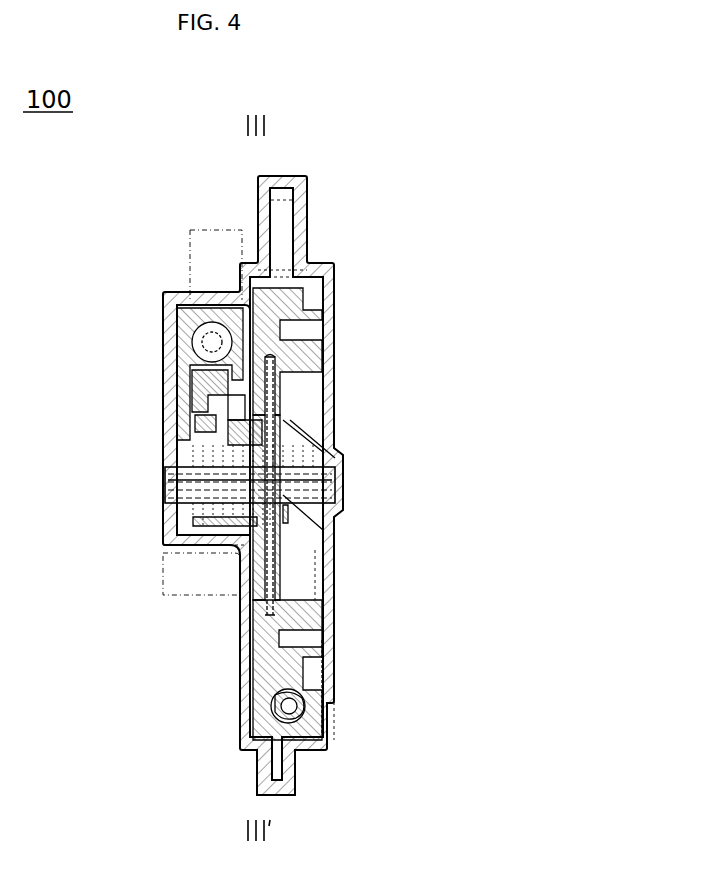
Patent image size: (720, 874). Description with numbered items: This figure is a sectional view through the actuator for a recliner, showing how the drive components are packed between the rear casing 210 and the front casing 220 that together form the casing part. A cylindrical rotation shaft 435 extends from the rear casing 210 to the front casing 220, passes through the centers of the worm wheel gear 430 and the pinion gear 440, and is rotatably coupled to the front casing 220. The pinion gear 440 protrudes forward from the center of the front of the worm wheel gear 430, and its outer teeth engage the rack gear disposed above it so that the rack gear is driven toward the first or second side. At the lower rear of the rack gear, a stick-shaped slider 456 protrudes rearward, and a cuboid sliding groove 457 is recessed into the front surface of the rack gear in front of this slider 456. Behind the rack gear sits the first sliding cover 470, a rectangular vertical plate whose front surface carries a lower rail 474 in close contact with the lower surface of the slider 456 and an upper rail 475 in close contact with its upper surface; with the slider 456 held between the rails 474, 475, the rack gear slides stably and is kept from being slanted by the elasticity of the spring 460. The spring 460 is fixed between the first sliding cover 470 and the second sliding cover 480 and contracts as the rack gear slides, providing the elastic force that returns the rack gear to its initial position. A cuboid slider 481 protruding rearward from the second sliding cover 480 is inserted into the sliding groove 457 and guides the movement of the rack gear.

The rear casing 210 is at (327, 290).
The front casing 220 is at (176, 350).
The worm wheel gear 430 is at (312, 630).
The rotation shaft 435 is at (185, 485).
The pinion gear 440 is at (203, 513).
The slider 456 is at (232, 423).
The sliding groove 457 is at (240, 427).
The spring 460 is at (192, 336).
The first sliding cover 470 is at (230, 312).
The rail 474 is at (242, 447).
The rail 475 is at (237, 410).
The second sliding cover 480 is at (185, 383).
The slider 481 is at (205, 425).